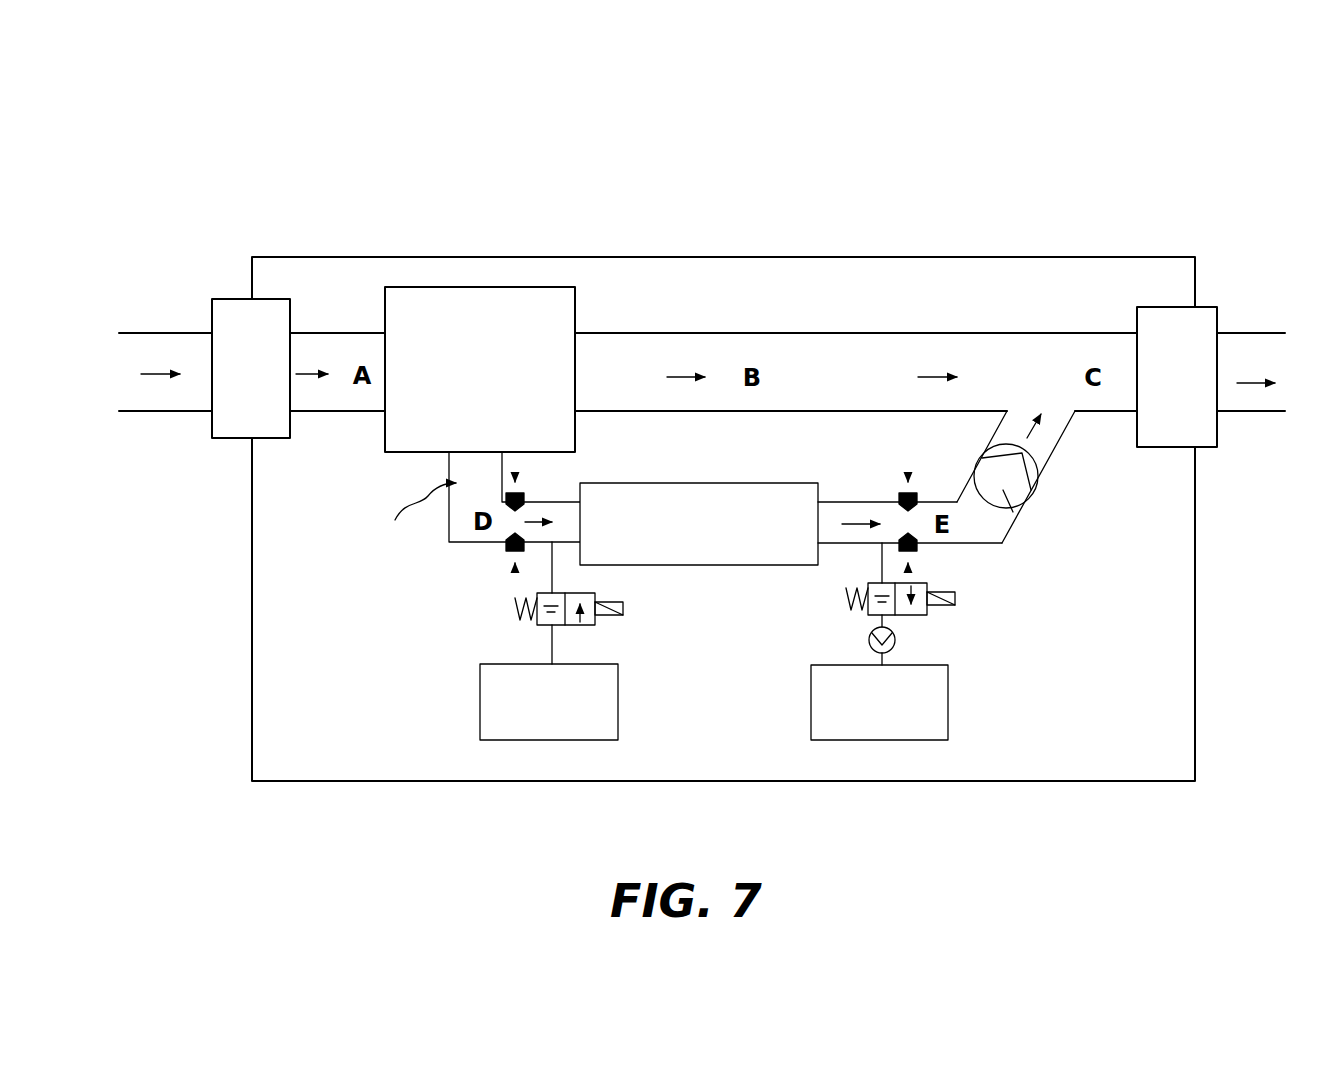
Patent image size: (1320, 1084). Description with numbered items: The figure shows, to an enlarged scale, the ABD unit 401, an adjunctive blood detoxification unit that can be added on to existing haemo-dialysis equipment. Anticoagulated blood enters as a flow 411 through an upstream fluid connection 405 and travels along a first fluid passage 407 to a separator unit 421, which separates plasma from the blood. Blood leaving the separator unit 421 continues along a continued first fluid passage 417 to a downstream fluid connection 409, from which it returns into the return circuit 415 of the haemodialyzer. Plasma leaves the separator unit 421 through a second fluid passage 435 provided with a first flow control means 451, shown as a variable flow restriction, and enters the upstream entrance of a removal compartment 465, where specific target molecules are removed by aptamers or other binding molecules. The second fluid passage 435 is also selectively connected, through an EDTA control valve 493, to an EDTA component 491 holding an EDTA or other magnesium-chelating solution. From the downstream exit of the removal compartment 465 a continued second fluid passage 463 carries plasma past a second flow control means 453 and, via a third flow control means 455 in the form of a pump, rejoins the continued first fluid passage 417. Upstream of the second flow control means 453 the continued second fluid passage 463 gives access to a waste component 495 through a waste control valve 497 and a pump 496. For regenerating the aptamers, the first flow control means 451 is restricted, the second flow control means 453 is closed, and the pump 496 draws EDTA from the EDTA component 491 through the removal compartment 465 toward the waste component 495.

The ABD unit 401 is at (836, 180).
The upstream fluid connection 405 is at (251, 368).
The first fluid passage 407 is at (323, 343).
The downstream fluid connection 409 is at (1177, 377).
The flow 411 is at (165, 375).
The return circuit 415 is at (1252, 385).
The continued first fluid passage 417 is at (652, 345).
The separator unit 421 is at (500, 300).
The second fluid passage 435 is at (460, 529).
The first flow control means 451 is at (505, 546).
The second flow control means 453 is at (920, 548).
The third flow control means 455 is at (1012, 517).
The continued second fluid passage 463 is at (970, 514).
The removal compartment 465 is at (793, 483).
The EDTA component 491 is at (525, 740).
The EDTA control valve 493 is at (537, 610).
The waste component 495 is at (882, 740).
The pump 496 is at (896, 640).
The waste control valve 497 is at (927, 588).